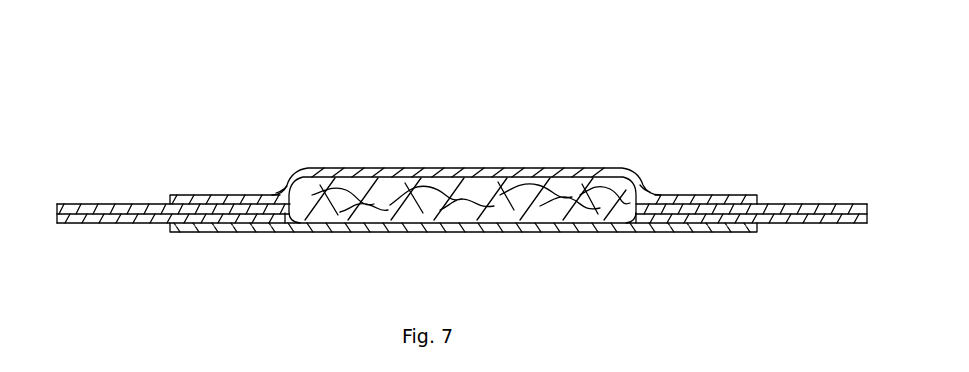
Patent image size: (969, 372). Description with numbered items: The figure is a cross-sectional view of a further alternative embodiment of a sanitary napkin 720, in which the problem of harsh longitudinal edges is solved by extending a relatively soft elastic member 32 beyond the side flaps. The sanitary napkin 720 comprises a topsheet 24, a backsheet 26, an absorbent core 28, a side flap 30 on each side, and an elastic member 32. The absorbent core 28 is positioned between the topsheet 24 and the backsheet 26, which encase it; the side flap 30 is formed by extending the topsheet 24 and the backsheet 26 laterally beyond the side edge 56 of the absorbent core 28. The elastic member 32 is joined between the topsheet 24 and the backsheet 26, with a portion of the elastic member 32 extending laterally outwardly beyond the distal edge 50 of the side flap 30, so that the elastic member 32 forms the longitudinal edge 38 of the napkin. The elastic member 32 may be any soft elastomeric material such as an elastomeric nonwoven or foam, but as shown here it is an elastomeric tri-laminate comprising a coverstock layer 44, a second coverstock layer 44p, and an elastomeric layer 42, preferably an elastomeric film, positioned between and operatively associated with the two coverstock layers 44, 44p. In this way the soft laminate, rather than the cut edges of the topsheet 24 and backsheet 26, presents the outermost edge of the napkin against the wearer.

The sanitary napkin 720 is at (358, 148).
The topsheet 24 is at (478, 173).
The backsheet 26 is at (453, 231).
The absorbent core 28 is at (472, 207).
The side flap 30 is at (285, 213).
The elastic member 32 is at (155, 207).
The longitudinal edge 38 is at (58, 218).
The elastomeric layer 42 is at (133, 213).
The coverstock layer 44 is at (123, 223).
The second coverstock layer 44p is at (155, 210).
The distal edge 50 is at (170, 233).
The side edge 56 is at (285, 188).